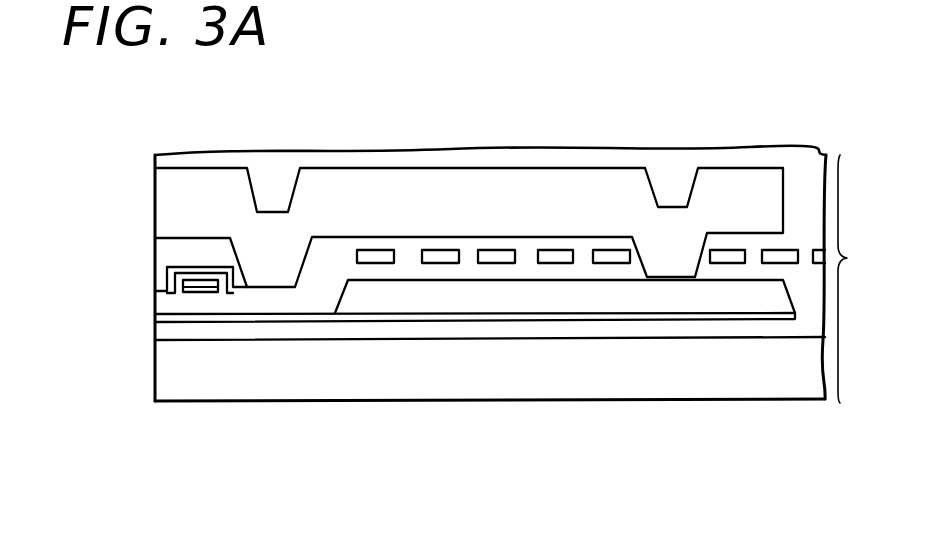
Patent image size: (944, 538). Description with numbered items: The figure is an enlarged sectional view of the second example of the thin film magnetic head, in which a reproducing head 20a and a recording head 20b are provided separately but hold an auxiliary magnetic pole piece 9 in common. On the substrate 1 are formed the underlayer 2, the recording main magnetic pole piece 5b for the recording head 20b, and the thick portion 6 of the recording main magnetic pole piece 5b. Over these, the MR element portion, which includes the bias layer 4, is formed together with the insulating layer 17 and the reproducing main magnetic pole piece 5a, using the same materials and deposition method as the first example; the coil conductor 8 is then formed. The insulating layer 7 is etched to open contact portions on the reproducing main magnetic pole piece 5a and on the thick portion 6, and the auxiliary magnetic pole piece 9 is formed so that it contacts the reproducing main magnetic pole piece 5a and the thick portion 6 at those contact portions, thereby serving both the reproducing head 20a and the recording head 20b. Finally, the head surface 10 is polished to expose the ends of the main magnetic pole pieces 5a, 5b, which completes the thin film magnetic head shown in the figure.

The substrate 1 is at (220, 383).
The underlayer 2 is at (373, 328).
The bias layer 4 is at (212, 283).
The reproducing main magnetic pole piece 5a is at (157, 290).
The recording main magnetic pole piece 5b is at (710, 305).
The thick portion 6 is at (610, 298).
The insulating layer 7 is at (330, 257).
The coil conductor 8 is at (507, 250).
The auxiliary magnetic pole piece 9 is at (710, 182).
The head surface 10 is at (147, 335).
The insulating layer 17 is at (190, 275).
The reproducing head 20a is at (146, 252).
The recording head 20b is at (863, 279).